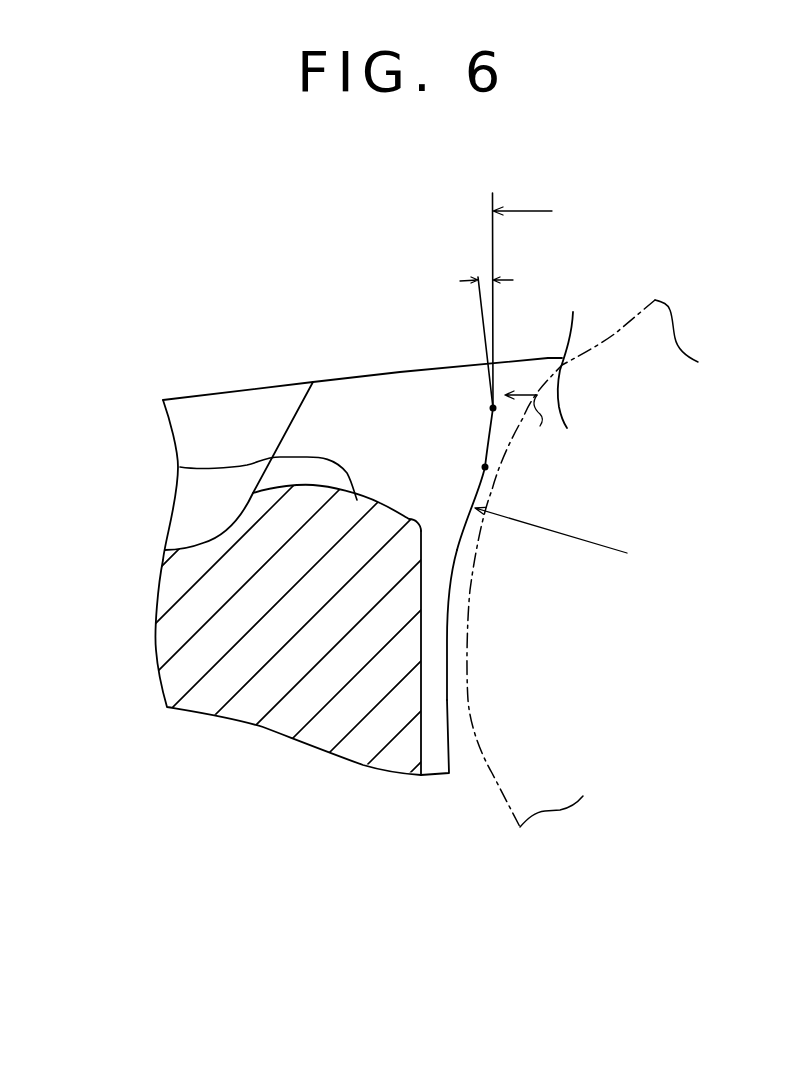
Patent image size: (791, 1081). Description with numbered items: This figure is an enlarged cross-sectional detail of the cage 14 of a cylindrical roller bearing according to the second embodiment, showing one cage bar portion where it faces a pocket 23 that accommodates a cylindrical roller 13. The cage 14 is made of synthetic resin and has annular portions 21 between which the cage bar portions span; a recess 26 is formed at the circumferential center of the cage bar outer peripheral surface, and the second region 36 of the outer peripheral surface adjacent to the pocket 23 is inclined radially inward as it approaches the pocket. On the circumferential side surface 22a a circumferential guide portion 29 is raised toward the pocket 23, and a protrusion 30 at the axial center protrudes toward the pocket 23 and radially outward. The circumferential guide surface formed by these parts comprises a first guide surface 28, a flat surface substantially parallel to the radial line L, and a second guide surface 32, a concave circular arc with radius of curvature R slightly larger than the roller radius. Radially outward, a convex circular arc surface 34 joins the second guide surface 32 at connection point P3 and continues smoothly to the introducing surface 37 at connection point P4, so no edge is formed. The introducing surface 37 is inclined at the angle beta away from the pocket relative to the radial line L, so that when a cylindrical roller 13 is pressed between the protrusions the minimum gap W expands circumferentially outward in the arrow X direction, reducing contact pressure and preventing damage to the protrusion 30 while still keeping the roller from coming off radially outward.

The cylindrical roller 13 is at (492, 773).
The cage 14 is at (150, 388).
The annular portion 21 is at (552, 358).
The circumferential side surface 22a is at (420, 595).
The pocket 23 is at (532, 382).
The recess 26 is at (198, 538).
The first guide surface 28 is at (448, 632).
The circumferential guide portion 29 is at (437, 707).
The protrusion 30 is at (433, 376).
The second guide surface 32 is at (463, 537).
The circular arc surface 34 is at (493, 447).
The second region of outer peripheral surface 36 is at (180, 467).
The introducing surface 37 is at (515, 373).
The connection point P3 is at (485, 467).
The connection point P4 is at (493, 408).
The radial line L is at (490, 237).
The minimum gap W is at (522, 200).
The radius of curvature R is at (553, 530).
The arrow X direction X is at (530, 422).